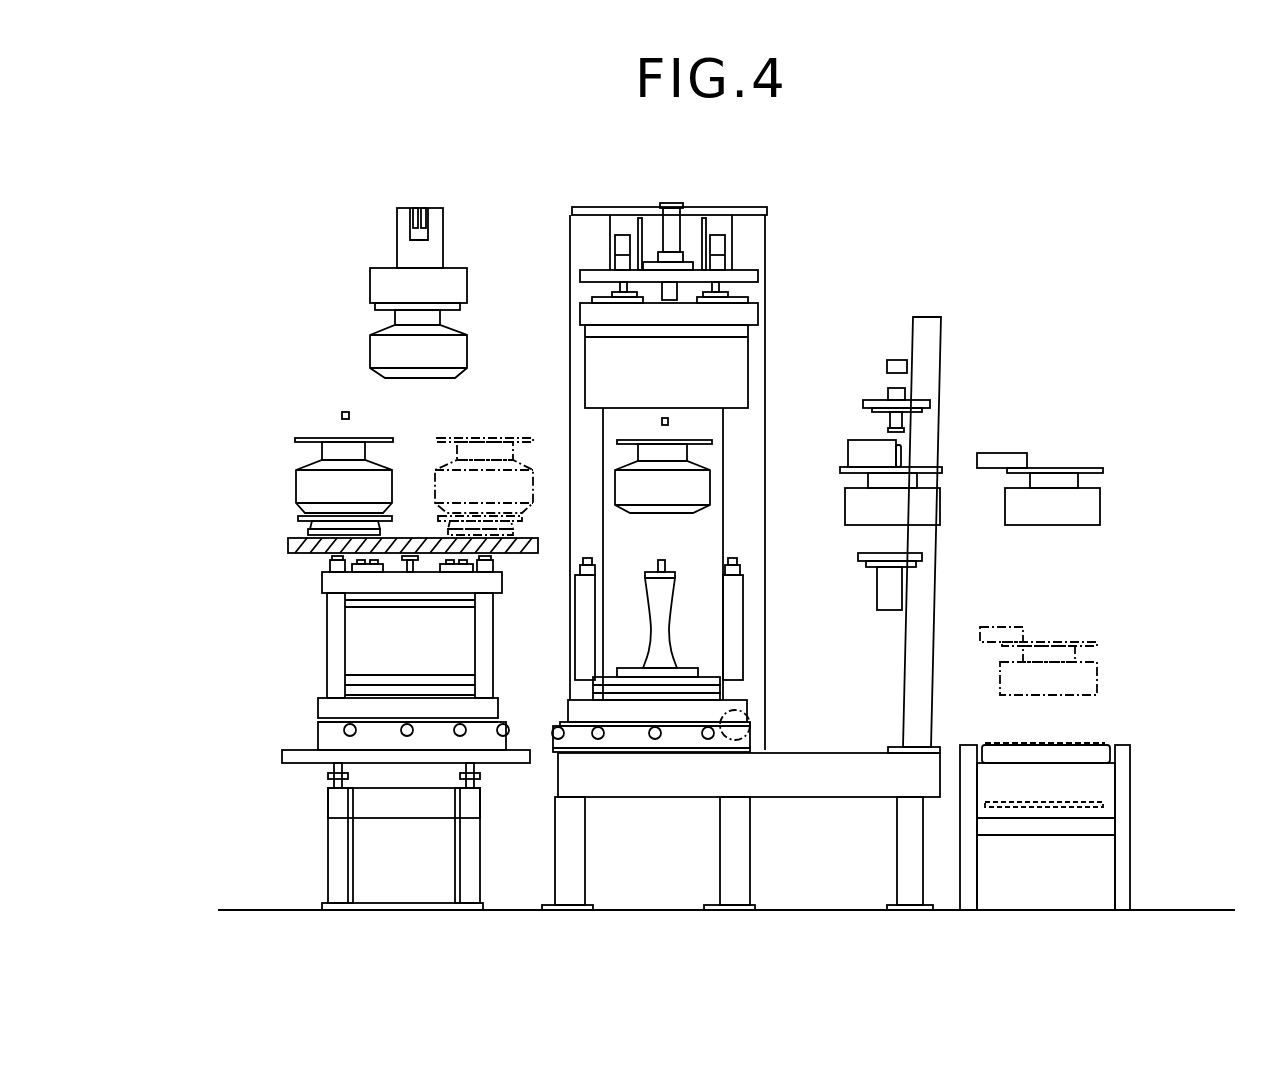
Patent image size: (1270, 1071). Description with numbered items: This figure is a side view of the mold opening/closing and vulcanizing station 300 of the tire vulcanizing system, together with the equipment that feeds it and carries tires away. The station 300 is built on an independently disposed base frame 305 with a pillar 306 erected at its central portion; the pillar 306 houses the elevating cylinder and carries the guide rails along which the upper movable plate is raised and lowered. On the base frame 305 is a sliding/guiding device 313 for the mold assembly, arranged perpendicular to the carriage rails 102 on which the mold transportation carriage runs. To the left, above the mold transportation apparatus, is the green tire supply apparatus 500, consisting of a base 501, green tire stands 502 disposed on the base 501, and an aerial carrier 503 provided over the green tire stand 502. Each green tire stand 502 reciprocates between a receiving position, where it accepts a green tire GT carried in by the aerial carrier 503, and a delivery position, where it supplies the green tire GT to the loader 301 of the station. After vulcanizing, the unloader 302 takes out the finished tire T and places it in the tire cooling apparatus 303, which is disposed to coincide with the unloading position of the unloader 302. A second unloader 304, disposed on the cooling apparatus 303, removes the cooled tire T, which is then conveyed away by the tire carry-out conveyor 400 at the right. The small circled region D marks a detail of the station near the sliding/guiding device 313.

The carriage rails 102 is at (330, 803).
The mold opening/closing and vulcanizing station 300 is at (741, 525).
The loader 301 is at (305, 437).
The unloader 302 is at (843, 468).
The tire cooling apparatus 303 is at (942, 337).
The unloader 304 is at (1085, 468).
The base frame 305 is at (812, 753).
The pillar 306 is at (767, 292).
The sliding/guiding device 313 is at (628, 742).
The tire carry-out conveyor 400 is at (1118, 730).
The green tire supply apparatus 500 is at (389, 234).
The base 501 is at (288, 545).
The green tire stand 502 is at (300, 520).
The aerial carrier 503 is at (420, 210).
The green tyre GT is at (468, 352).
The tire T is at (940, 508).
The detail region D is at (748, 716).